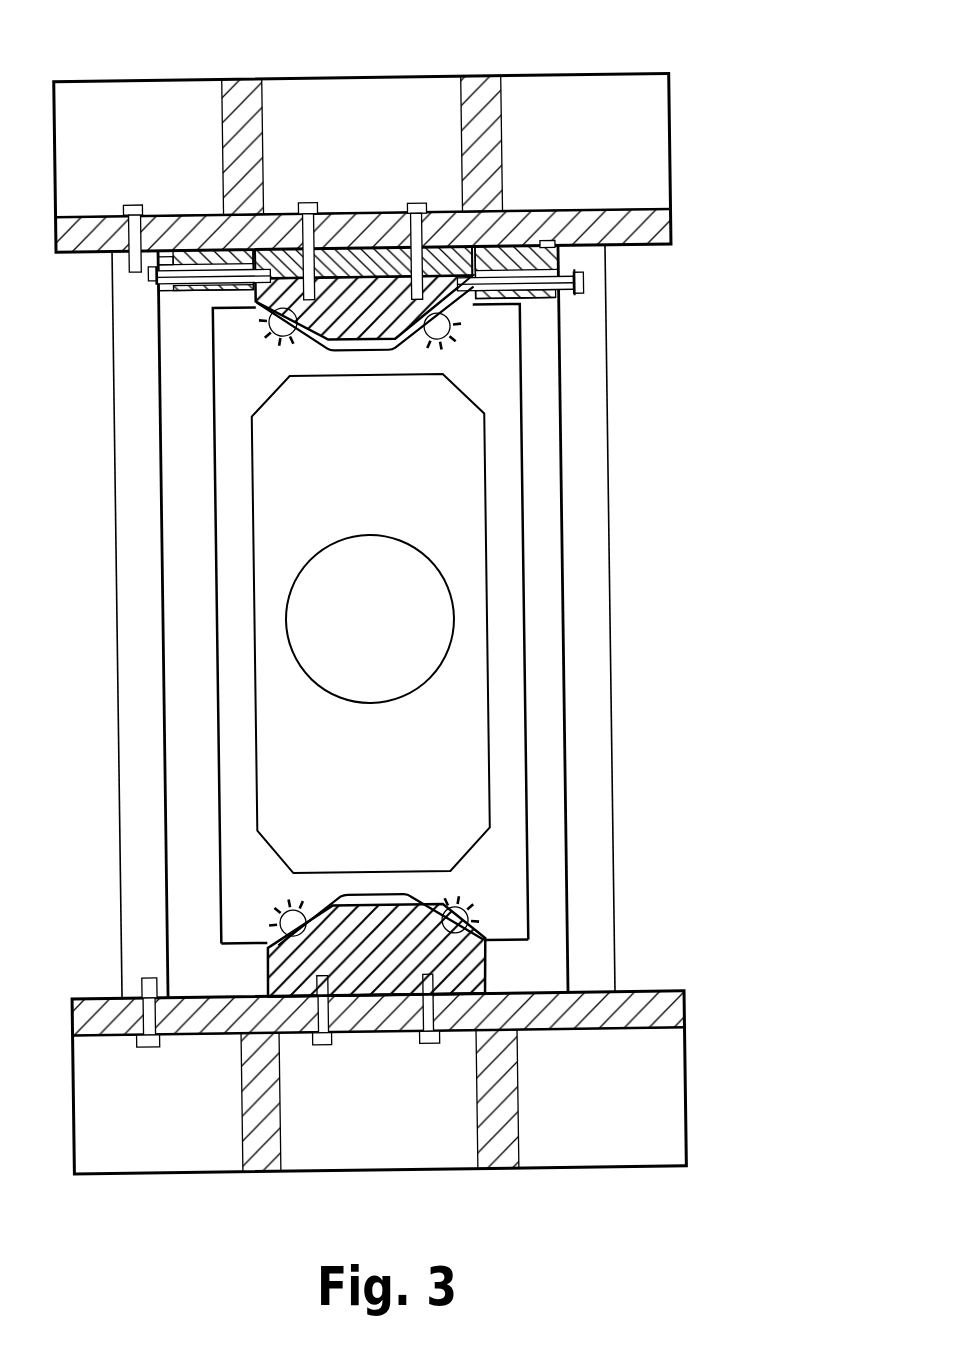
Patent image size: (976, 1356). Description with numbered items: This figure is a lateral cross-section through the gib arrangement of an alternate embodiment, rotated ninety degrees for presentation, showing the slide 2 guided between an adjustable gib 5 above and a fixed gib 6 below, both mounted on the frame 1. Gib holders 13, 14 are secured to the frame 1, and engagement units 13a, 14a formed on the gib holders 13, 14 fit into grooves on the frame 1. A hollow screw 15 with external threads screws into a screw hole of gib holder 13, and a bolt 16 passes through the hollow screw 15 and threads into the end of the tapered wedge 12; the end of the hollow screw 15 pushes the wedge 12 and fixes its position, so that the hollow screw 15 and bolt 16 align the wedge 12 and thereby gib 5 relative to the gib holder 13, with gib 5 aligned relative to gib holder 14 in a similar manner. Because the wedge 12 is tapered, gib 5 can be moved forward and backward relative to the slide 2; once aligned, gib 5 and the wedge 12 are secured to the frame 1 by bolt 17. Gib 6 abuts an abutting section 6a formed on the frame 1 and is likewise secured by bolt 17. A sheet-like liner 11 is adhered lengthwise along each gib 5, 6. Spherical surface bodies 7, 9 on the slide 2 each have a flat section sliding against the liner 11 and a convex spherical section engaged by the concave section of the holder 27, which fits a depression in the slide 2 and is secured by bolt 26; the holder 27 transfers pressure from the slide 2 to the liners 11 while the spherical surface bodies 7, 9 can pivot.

The frame 1 is at (247, 83).
The slide 2 is at (505, 536).
The gib 5 is at (356, 300).
The gib 6 is at (370, 960).
The abutting section 6a is at (265, 1001).
The spherical surface body 7 is at (456, 336).
The spherical surface body 9 is at (448, 916).
The sheet-like liner 11 is at (472, 308).
The wedge 12 is at (452, 248).
The gib holder 13 is at (210, 250).
The engagement unit 13a is at (182, 250).
The gib holder 14 is at (515, 259).
The engagement unit 14a is at (555, 244).
The hollow screw 15 is at (161, 284).
The bolt 16 is at (155, 269).
The bolt 17 is at (310, 202).
The bolt 26 is at (440, 349).
The holder 27 is at (475, 321).